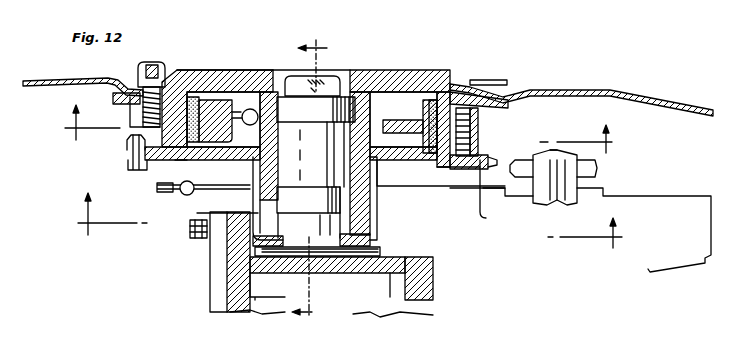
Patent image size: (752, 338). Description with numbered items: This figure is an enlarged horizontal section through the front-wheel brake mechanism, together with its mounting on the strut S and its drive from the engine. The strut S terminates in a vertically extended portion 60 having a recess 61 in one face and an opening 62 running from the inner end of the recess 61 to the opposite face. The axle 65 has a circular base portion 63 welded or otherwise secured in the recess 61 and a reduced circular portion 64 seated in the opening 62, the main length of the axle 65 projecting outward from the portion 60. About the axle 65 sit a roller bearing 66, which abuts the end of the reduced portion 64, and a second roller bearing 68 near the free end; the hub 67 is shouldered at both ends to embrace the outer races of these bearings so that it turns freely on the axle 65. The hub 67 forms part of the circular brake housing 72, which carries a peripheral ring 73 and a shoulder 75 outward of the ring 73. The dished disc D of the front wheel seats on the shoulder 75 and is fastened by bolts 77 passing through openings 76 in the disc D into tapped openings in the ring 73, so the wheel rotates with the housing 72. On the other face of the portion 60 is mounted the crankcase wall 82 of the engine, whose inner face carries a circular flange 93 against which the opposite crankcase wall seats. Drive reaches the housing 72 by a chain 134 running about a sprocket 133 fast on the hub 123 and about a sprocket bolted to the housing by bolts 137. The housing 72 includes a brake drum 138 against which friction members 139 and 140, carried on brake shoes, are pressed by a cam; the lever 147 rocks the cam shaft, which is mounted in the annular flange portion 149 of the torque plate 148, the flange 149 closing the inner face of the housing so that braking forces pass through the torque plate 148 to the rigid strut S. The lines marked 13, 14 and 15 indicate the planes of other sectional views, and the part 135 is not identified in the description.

The dished disc D is at (640, 93).
The strut S is at (250, 248).
The section line 13 is at (309, 182).
The section line 14 is at (338, 129).
The section line 15 is at (347, 220).
The vertically extended portion 60 is at (372, 257).
The recess 61 is at (363, 245).
The opening 62 is at (326, 230).
The circular base portion 63 is at (332, 258).
The reduced circular portion 64 is at (292, 242).
The axle 65 is at (309, 159).
The roller bearing 66 is at (345, 203).
The hub 67 is at (365, 142).
The roller bearing 68 is at (330, 104).
The brake housing 72 is at (385, 82).
The ring 73 is at (133, 113).
The shoulder 75 is at (187, 72).
The openings 76 is at (160, 76).
The bolts 77 is at (132, 72).
The crankcase wall 82 is at (388, 285).
The circular flange 93 is at (420, 288).
The hub 123 is at (568, 150).
The sprocket 133 is at (595, 168).
The chain 134 is at (127, 163).
The plate 135 is at (496, 195).
The bolts 137 is at (480, 152).
The brake drum 138 is at (480, 136).
The friction member 139 is at (433, 95).
The friction member 140 is at (206, 110).
The lever 147 is at (237, 208).
The torque plate 148 is at (219, 160).
The annular flange portion 149 is at (410, 158).